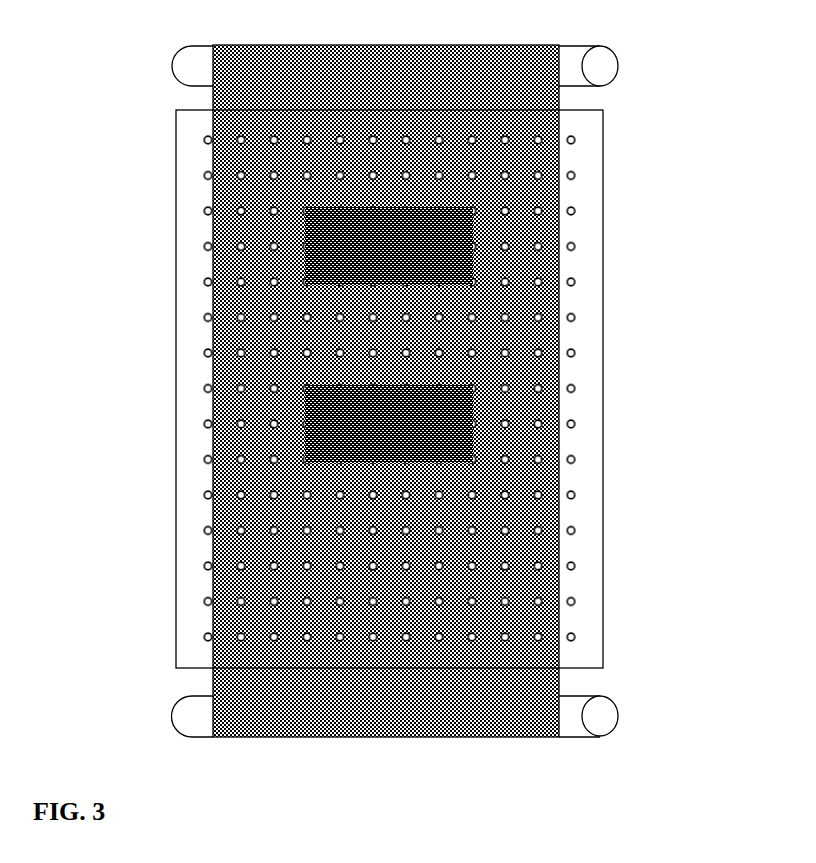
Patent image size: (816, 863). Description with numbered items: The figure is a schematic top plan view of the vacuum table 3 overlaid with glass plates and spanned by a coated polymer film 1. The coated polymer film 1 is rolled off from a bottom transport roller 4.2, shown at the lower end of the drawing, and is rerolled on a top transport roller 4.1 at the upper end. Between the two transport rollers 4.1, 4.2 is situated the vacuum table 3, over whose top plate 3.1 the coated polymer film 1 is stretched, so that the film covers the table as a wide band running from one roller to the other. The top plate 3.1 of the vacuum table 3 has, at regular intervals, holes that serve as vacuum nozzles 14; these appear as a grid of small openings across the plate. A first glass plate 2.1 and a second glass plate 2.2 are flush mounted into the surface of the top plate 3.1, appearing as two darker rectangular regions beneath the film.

The coated polymer film 1 is at (547, 102).
The first glass plate 2.1 is at (473, 271).
The second glass plate 2.2 is at (473, 403).
The vacuum table 3 is at (150, 282).
The top plate 3.1 is at (578, 158).
The top transport roller 4.1 is at (600, 70).
The bottom transport roller 4.2 is at (600, 716).
The vacuum nozzles 14 is at (570, 566).